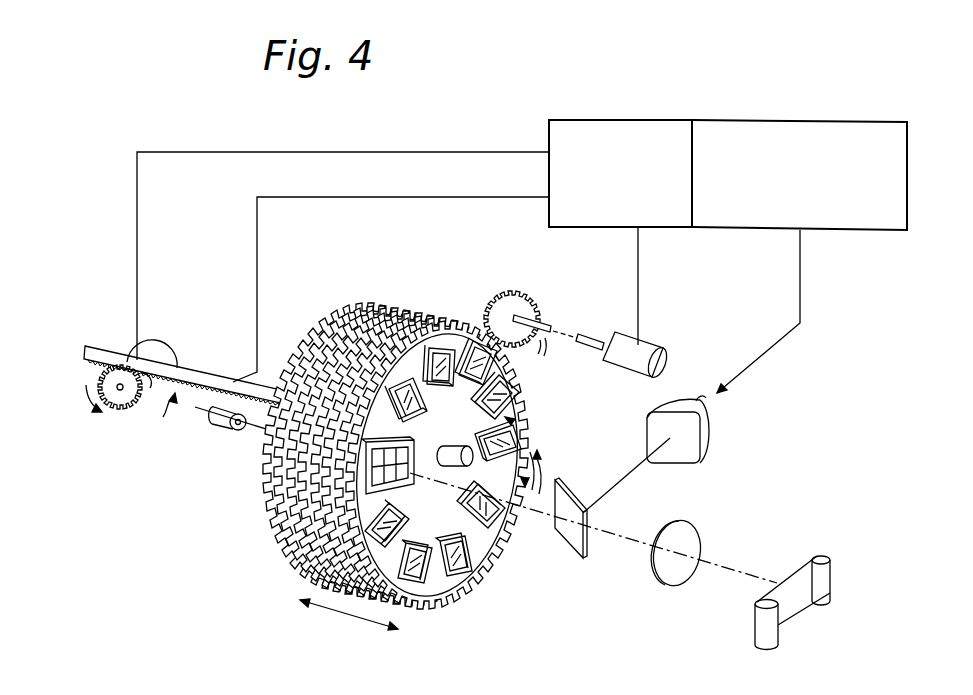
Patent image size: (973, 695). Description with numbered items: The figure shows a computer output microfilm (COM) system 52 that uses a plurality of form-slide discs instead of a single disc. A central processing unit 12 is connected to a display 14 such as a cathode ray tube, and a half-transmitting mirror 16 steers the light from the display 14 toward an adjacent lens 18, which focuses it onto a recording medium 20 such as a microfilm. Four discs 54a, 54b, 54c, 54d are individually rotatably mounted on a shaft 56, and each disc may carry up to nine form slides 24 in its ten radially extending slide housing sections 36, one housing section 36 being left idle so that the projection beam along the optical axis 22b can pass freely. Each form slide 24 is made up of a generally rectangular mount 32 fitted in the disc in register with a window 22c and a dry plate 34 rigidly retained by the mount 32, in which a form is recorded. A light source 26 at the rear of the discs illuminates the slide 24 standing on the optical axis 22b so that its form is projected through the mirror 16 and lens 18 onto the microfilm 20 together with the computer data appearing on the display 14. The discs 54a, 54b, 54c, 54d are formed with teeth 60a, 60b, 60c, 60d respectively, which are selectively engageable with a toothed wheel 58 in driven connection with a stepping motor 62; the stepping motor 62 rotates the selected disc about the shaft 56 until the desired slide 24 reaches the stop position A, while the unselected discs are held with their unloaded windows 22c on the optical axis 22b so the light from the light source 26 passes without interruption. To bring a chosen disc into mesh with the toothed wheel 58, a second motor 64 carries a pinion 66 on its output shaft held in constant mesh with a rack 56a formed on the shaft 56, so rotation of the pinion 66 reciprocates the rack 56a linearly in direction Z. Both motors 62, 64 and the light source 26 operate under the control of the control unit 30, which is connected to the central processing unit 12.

The central processing unit 12 is at (803, 122).
The display 14 is at (703, 457).
The half-transmitting mirror 16 is at (580, 560).
The lens 18 is at (660, 585).
The recording medium 20 is at (783, 587).
The optical axis 22b is at (747, 573).
The window 22c is at (470, 460).
The form slide 24 is at (465, 464).
The light source 26 is at (224, 431).
The control unit 30 is at (634, 120).
The mount 32 is at (503, 390).
The dry plate 34 is at (463, 464).
The slide housing section 36 is at (520, 377).
The COM system 52 is at (890, 320).
The disc 54a is at (401, 427).
The disc 54b is at (388, 413).
The disc 54c is at (376, 410).
The disc 54d is at (358, 423).
The shaft 56 is at (186, 377).
The rack 56a is at (160, 419).
The toothed wheel 58 is at (532, 291).
The teeth 60a is at (368, 335).
The teeth 60b is at (346, 356).
The teeth 60c is at (332, 351).
The teeth 60d is at (297, 381).
The stepping motor 62 is at (658, 345).
The second motor 64 is at (157, 348).
The pinion 66 is at (118, 406).